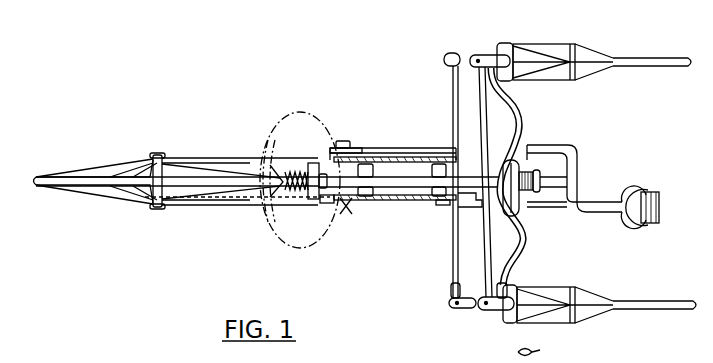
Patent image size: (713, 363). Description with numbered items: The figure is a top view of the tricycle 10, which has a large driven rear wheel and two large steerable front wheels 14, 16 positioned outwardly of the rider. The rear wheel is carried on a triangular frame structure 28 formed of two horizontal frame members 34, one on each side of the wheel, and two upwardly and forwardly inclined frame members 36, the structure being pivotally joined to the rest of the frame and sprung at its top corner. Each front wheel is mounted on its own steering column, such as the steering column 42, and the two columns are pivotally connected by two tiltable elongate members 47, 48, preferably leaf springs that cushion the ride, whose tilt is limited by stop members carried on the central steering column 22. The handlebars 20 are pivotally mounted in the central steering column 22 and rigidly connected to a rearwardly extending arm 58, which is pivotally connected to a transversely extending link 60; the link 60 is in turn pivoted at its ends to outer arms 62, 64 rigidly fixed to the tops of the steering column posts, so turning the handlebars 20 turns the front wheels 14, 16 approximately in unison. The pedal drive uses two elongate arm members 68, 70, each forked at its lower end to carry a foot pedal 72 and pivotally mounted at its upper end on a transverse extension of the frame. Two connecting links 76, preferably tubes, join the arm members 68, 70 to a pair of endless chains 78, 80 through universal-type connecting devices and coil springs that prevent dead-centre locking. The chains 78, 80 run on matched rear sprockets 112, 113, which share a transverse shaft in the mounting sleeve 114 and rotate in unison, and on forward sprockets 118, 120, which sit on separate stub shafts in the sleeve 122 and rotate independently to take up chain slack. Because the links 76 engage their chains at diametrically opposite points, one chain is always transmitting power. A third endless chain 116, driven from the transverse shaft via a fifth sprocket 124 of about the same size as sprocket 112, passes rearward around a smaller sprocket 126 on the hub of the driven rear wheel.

The tricycle 10 is at (388, 142).
The front wheel 14 is at (655, 310).
The front wheel 16 is at (683, 67).
The handlebars 20 is at (514, 106).
The central steering column 22 is at (460, 170).
The triangular frame structure 28 is at (226, 157).
The horizontal frame member 34 is at (214, 206).
The upwardly and forwardly inclined frame member 36 is at (228, 204).
The steering column 42 is at (497, 311).
The tiltable elongate member 47 is at (488, 266).
The tiltable elongate member 48 is at (508, 282).
The rearwardly extending arm 58 is at (524, 171).
The transversely extending link 60 is at (453, 260).
The outer arm 62 is at (466, 309).
The outer arm 64 is at (444, 58).
The elongate arm member 68 is at (598, 214).
The elongate arm member 70 is at (563, 150).
The foot pedal 72 is at (660, 210).
The connecting link 76 is at (396, 147).
The endless chain 78 is at (430, 200).
The endless chain 80 is at (411, 156).
The sprocket 112 is at (366, 198).
The sprocket 113 is at (366, 147).
The mounting sleeve 114 is at (340, 164).
The third endless chain 116 is at (284, 226).
The forward sprocket 118 is at (440, 205).
The forward sprocket 120 is at (436, 162).
The sleeve 122 is at (428, 210).
The fifth sprocket 124 is at (344, 212).
The smaller sprocket 126 is at (150, 199).